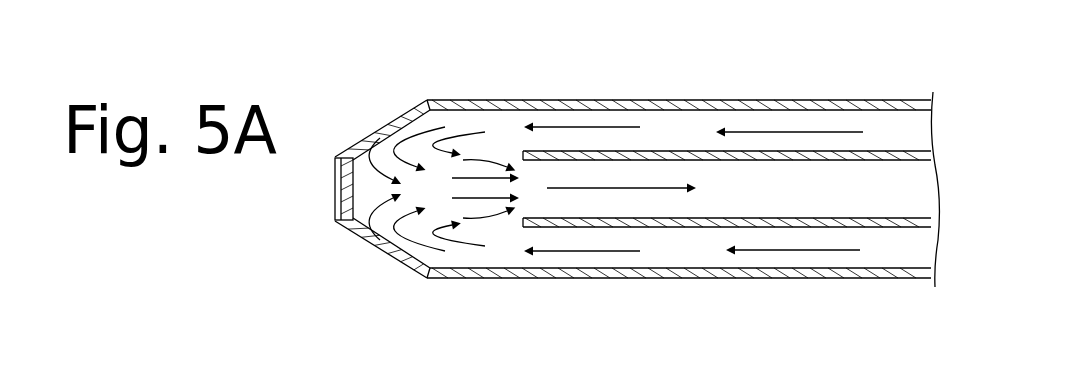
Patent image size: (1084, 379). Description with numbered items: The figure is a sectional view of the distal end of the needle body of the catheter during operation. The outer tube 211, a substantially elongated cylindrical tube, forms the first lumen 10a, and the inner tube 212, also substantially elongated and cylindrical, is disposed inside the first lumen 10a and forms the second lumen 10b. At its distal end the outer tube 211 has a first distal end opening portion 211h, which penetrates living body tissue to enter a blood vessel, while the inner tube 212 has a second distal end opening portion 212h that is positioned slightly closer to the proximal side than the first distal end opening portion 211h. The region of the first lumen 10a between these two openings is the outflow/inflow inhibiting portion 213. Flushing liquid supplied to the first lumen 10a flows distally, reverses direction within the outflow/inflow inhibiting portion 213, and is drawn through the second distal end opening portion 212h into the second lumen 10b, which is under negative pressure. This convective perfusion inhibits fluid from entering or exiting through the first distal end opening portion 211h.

The outer tube 211 is at (594, 106).
The inner tube 212 is at (703, 152).
The outflow/inflow inhibiting portion 213 is at (490, 137).
The first distal end opening portion 211h is at (333, 192).
The second distal end opening portion 212h is at (515, 193).
The first lumen 10a is at (815, 258).
The second lumen 10b is at (890, 205).